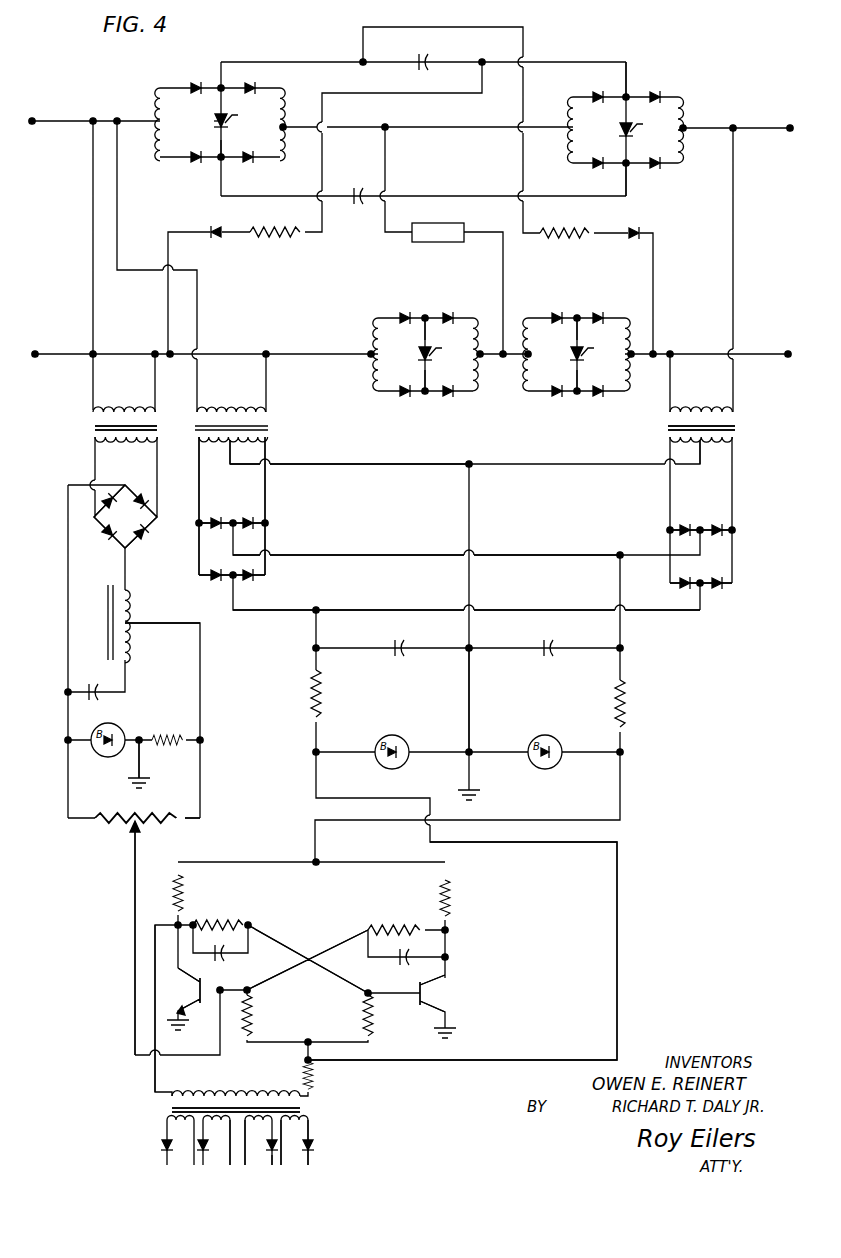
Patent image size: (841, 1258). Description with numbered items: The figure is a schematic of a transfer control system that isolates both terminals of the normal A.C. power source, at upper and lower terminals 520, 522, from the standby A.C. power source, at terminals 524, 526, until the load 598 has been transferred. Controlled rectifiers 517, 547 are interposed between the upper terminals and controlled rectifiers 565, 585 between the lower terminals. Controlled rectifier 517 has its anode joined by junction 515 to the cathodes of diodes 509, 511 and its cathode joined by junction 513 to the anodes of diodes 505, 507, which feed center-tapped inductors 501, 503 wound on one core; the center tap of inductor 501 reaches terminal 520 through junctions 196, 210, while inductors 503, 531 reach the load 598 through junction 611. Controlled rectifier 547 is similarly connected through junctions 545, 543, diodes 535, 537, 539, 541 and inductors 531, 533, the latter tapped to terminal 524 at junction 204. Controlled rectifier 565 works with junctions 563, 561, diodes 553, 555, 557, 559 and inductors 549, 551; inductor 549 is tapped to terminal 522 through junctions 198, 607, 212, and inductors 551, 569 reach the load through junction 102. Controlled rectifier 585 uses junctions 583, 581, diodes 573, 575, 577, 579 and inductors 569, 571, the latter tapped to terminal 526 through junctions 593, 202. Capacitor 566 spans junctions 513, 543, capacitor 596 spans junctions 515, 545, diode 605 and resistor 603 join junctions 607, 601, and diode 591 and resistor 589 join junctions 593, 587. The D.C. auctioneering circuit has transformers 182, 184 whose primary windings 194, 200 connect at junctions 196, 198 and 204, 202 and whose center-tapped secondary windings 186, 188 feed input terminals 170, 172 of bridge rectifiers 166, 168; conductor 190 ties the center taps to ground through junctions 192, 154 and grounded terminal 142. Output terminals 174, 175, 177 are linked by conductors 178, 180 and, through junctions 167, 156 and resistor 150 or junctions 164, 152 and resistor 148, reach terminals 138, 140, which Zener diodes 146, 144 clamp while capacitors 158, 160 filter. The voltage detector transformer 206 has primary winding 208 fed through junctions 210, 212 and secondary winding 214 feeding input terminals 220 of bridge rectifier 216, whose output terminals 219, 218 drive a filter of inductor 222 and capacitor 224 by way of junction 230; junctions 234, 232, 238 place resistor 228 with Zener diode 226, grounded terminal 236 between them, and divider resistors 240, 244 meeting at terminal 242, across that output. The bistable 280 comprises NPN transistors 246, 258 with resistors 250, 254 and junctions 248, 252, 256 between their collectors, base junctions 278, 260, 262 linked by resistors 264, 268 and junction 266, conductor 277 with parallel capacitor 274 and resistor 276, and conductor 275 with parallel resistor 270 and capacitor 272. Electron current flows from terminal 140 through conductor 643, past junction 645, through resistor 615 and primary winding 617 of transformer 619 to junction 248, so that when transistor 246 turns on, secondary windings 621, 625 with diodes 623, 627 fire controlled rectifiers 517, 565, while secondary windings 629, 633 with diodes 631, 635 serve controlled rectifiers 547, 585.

The junction 102 is at (503, 358).
The terminal 138 is at (624, 753).
The terminal 140 is at (313, 755).
The grounded terminal 142 is at (471, 750).
The Zener diode 144 is at (396, 734).
The second Zener diode 146 is at (547, 734).
The resistor 148 is at (312, 694).
The resistor 150 is at (626, 704).
The junction 152 is at (313, 648).
The junction 154 is at (466, 655).
The junction 156 is at (625, 652).
The capacitor 158 is at (390, 657).
The capacitor 160 is at (558, 650).
The junction 164 is at (317, 607).
The full wave bridge rectifier 166 is at (268, 523).
The junction 167 is at (620, 552).
The full wave bridge rectifier 168 is at (732, 556).
The input terminals 170 is at (197, 522).
The input terminals 172 is at (668, 529).
The output terminal 174 is at (220, 520).
The output terminal 175 is at (230, 578).
The output terminal 177 is at (703, 588).
The conductor 178 is at (357, 552).
The conductor 180 is at (432, 607).
The transformer 182 is at (270, 431).
The transformer 184 is at (736, 431).
The secondary winding 186 is at (227, 449).
The secondary winding 188 is at (704, 452).
The conductor 190 is at (358, 462).
The junction 192 is at (472, 463).
The primary winding 194 is at (232, 406).
The junction 196 is at (117, 118).
The junction 198 is at (268, 350).
The primary winding 200 is at (699, 406).
The junction 202 is at (672, 350).
The junction 204 is at (735, 125).
The transformer 206 is at (95, 428).
The primary winding 208 is at (122, 406).
The junction 210 is at (90, 124).
The junction 212 is at (155, 350).
The secondary winding 214 is at (104, 445).
The full wave bridge rectifier 216 is at (118, 545).
The output terminal 218 is at (127, 487).
The output terminal 219 is at (128, 547).
The input terminals 220 is at (93, 522).
The inductor 222 is at (134, 605).
The capacitor 224 is at (105, 697).
The Zener diode 226 is at (101, 758).
The resistor 228 is at (164, 746).
The junction 230 is at (65, 694).
The junction 232 is at (132, 630).
The junction 234 is at (66, 743).
The grounded terminal 236 is at (160, 738).
The junction 238 is at (204, 740).
The resistor 240 is at (104, 824).
The terminal 242 is at (133, 828).
The resistor 244 is at (166, 824).
The NPN transistor 246 is at (198, 990).
The junction 248 is at (176, 922).
The resistor 250 is at (185, 884).
The junction 252 is at (318, 860).
The resistor 254 is at (452, 902).
The junction 256 is at (449, 932).
The second NPN transistor 258 is at (440, 997).
The junction 260 is at (251, 992).
The junction 262 is at (364, 992).
The resistor 264 is at (254, 1016).
The junction 266 is at (308, 1040).
The resistor 268 is at (375, 1020).
The resistor 270 is at (225, 924).
The capacitor 272 is at (215, 960).
The capacitor 274 is at (400, 961).
The conductor 275 is at (273, 934).
The resistor 276 is at (393, 928).
The conductor 277 is at (326, 948).
The junction 278 is at (221, 988).
The multivibrator 280 is at (134, 980).
The center-tapped inductor 501 is at (159, 148).
The center-tapped inductor 503 is at (286, 100).
The diode 505 is at (196, 84).
The diode 507 is at (242, 86).
The diode 509 is at (196, 163).
The diode 511 is at (250, 163).
The junction 513 is at (217, 110).
The junction 515 is at (228, 156).
The controlled rectifier 517 is at (216, 127).
The upper terminal 520 is at (34, 118).
The lower terminal 522 is at (35, 358).
The upper terminal 524 is at (789, 132).
The lower terminal 526 is at (789, 350).
The center-tapped inductor 531 is at (572, 148).
The center-tapped inductor 533 is at (690, 102).
The diode 535 is at (598, 93).
The diode 537 is at (659, 92).
The diode 539 is at (598, 167).
The diode 541 is at (657, 167).
The junction 543 is at (627, 95).
The junction 545 is at (628, 167).
The controlled rectifier 547 is at (629, 132).
The center-tapped inductor 549 is at (375, 368).
The center-tapped inductor 551 is at (490, 316).
The diode 553 is at (405, 314).
The diode 555 is at (405, 396).
The diode 557 is at (448, 314).
The diode 559 is at (447, 396).
The junction 561 is at (426, 314).
The junction 563 is at (425, 396).
The controlled rectifier 565 is at (433, 356).
The capacitor 566 is at (438, 62).
The center-tapped inductor 569 is at (545, 394).
The center-tapped inductor 571 is at (643, 318).
The diode 573 is at (556, 314).
The diode 575 is at (599, 314).
The diode 577 is at (560, 396).
The diode 579 is at (616, 397).
The junction 581 is at (576, 317).
The junction 583 is at (580, 392).
The controlled rectifier 585 is at (575, 360).
The junction 587 is at (360, 60).
The resistor 589 is at (570, 238).
The diode 591 is at (634, 238).
The junction 593 is at (655, 350).
The capacitor 596 is at (358, 204).
The load 598 is at (426, 242).
The junction 601 is at (484, 66).
The resistor 603 is at (280, 240).
The diode 605 is at (220, 228).
The junction 607 is at (171, 350).
The junction 611 is at (386, 126).
The resistor 615 is at (316, 1076).
The primary winding 617 is at (266, 1088).
The transformer 619 is at (303, 1111).
The secondary winding 621 is at (163, 1121).
The diode 623 is at (162, 1148).
The secondary winding 625 is at (231, 1150).
The diode 627 is at (204, 1152).
The secondary winding 629 is at (258, 1130).
The diode 631 is at (273, 1160).
The secondary winding 633 is at (310, 1127).
The diode 635 is at (310, 1152).
The conductor 643 is at (619, 976).
The junction 645 is at (304, 1060).